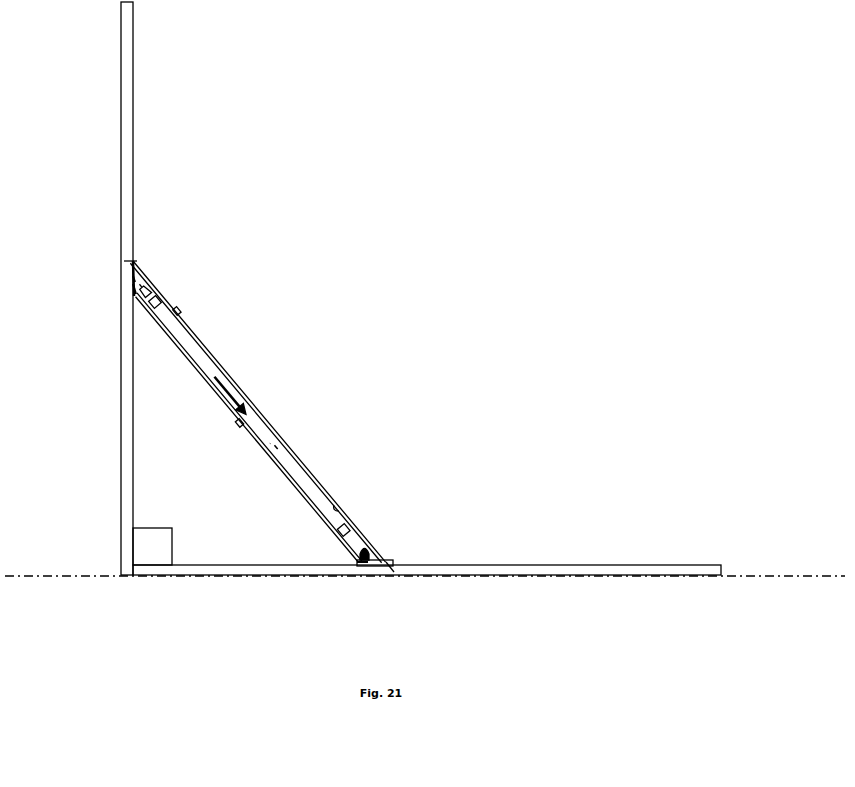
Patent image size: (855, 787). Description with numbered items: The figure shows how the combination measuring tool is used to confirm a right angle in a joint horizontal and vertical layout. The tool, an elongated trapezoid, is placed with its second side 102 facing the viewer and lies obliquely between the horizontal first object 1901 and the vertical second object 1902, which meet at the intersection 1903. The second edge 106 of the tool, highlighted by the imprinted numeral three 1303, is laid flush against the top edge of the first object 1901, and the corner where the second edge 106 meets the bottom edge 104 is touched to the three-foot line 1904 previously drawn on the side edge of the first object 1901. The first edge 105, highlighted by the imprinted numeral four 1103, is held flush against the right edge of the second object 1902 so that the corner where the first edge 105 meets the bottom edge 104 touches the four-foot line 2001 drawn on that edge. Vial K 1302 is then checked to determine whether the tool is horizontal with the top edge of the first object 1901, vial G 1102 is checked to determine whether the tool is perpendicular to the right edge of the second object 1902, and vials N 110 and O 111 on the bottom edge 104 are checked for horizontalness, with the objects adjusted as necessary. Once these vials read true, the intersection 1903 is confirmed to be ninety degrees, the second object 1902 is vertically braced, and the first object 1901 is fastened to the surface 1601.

The second side 102 is at (257, 416).
The bottom edge 104 is at (193, 328).
The first edge 105 is at (133, 286).
The second edge 106 is at (378, 567).
The vial N 110 is at (176, 314).
The vial O 111 is at (338, 508).
The vial G 1102 is at (152, 289).
The numeral "4" 1103 is at (133, 280).
The vial K 1302 is at (372, 560).
The numeral "3" 1303 is at (367, 567).
The surface 1601 is at (34, 585).
The first object 1901 is at (477, 566).
The second object 1902 is at (133, 205).
The intersection 1903 is at (136, 562).
The 3-foot line 1904 is at (388, 562).
The 4-foot line 2001 is at (133, 260).